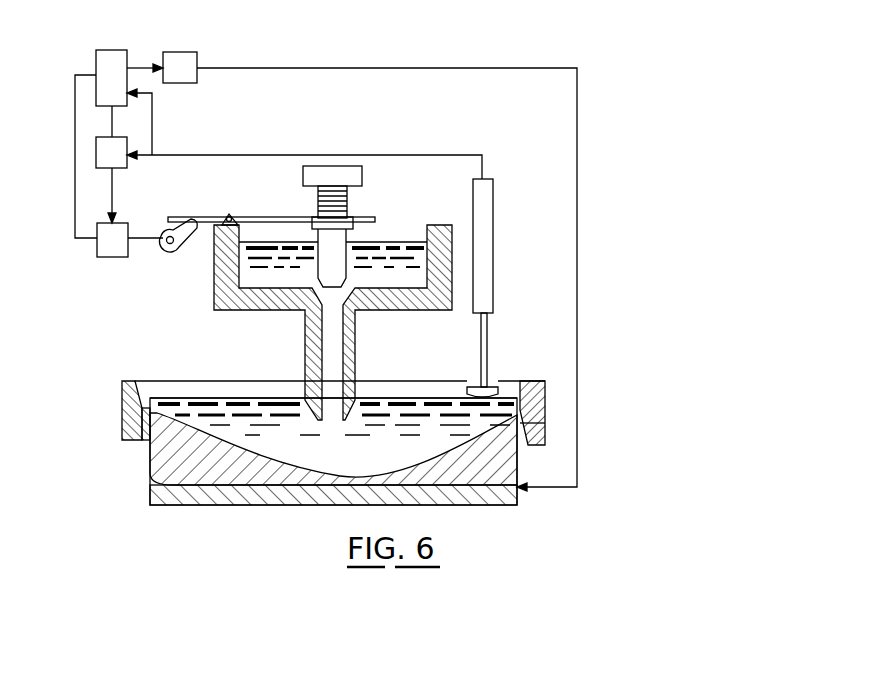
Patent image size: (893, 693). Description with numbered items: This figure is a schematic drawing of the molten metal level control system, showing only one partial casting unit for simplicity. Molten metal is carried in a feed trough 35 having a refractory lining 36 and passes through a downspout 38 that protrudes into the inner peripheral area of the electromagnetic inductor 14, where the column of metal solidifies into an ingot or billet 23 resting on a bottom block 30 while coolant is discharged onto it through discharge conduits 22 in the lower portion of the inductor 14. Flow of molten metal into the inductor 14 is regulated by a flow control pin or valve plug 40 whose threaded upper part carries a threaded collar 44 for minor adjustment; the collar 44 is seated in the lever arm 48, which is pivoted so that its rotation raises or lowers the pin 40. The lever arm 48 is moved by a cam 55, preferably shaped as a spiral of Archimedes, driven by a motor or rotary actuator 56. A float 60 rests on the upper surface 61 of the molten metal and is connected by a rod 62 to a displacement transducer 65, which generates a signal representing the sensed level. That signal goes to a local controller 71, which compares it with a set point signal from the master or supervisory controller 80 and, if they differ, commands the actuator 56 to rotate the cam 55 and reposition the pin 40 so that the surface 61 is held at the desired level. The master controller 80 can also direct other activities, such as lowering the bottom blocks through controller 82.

The electromagnetic inductor 14 is at (119, 417).
The discharge conduits 22 is at (545, 423).
The solidifying ingot or billet 23 is at (150, 460).
The bottom block 30 is at (168, 497).
The feed trough 35 is at (428, 311).
The refractory lining 36 is at (395, 311).
The downspout 38 is at (306, 334).
The flow control pin or valve plug 40 is at (336, 247).
The threaded collar 44 is at (351, 217).
The lever arm 48 is at (261, 216).
The cam 55 is at (193, 248).
The motor or rotary actuator 56 is at (102, 250).
The float 60 is at (500, 387).
The upper surface of the molten metal 61 is at (184, 400).
The rod 62 is at (488, 342).
The displacement transducer 65 is at (490, 241).
The local controller 71 is at (101, 163).
The master or supervisory controller 80 is at (101, 89).
The controller 82 is at (169, 78).